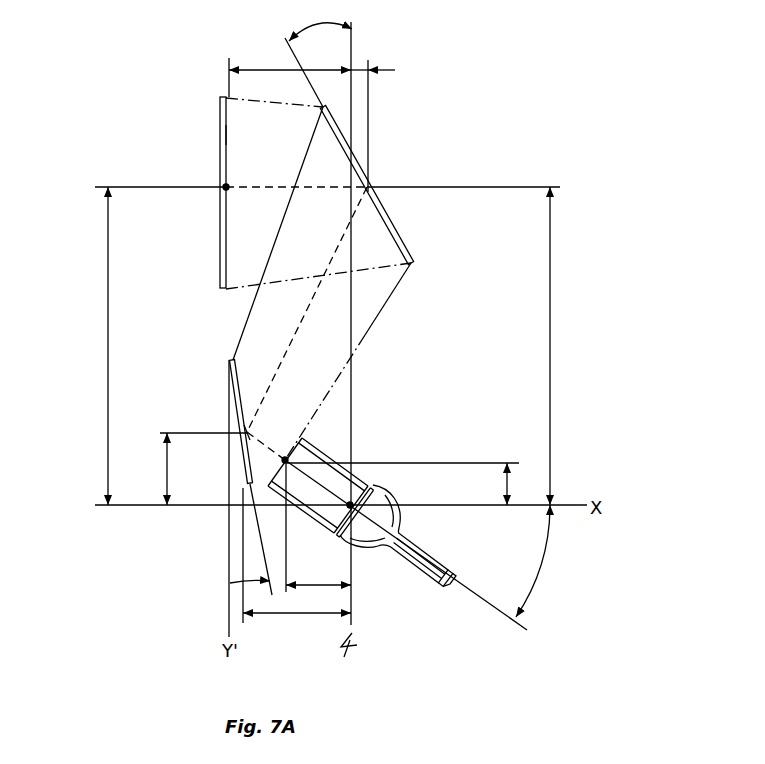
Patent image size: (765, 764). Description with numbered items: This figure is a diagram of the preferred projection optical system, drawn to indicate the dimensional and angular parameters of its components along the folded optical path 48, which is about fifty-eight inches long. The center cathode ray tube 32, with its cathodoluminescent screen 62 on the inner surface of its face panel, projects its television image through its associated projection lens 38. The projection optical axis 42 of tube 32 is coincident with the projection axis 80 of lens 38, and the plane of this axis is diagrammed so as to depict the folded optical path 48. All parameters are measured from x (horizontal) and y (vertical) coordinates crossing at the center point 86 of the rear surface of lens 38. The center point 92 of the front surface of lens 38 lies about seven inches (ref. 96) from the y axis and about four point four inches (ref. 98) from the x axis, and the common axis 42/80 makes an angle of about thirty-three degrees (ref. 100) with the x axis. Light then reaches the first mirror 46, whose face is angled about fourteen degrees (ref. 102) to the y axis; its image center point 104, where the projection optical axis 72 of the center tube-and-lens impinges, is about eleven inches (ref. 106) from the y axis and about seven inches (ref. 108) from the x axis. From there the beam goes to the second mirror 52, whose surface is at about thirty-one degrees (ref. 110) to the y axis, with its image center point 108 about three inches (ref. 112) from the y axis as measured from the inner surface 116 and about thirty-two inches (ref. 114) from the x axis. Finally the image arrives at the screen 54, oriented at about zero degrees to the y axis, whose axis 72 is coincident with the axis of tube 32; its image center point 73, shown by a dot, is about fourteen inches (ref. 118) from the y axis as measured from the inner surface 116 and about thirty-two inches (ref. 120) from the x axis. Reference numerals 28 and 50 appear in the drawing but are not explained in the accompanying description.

The light source lamp 28 is at (366, 574).
The cathode ray tube 32 is at (378, 542).
The projection lens 38 is at (317, 524).
The projection optical axis 42 is at (500, 600).
The first mirror 46 is at (230, 362).
The folded optical path 48 is at (382, 311).
The mirror assembly 50 is at (165, 166).
The second mirror 52 is at (392, 252).
The screen 54 is at (218, 115).
The cathodoluminescent screen 62 is at (377, 486).
The axis of screen 72 is at (262, 191).
The image center point 73 is at (233, 184).
The projection axis of lens 80 is at (292, 457).
The center point of rear surface of lens 86 is at (345, 490).
The center point of front surface of lens 92 is at (283, 445).
The distance from y axis 96 is at (310, 590).
The distance from x axis 98 is at (504, 483).
The angle of common axis 100 is at (545, 565).
The angle of first mirror face 102 is at (227, 583).
The image center point of first mirror 104 is at (252, 432).
The distance from y axis 106 is at (299, 616).
The image center point of second mirror 108 is at (369, 196).
The angle of second mirror surface 110 is at (346, 29).
The distance from y axis 112 is at (362, 68).
The distance from x axis 114 is at (553, 362).
The inner surface 116 is at (223, 150).
The distance from y axis 118 is at (277, 67).
The distance from x axis 120 is at (107, 353).